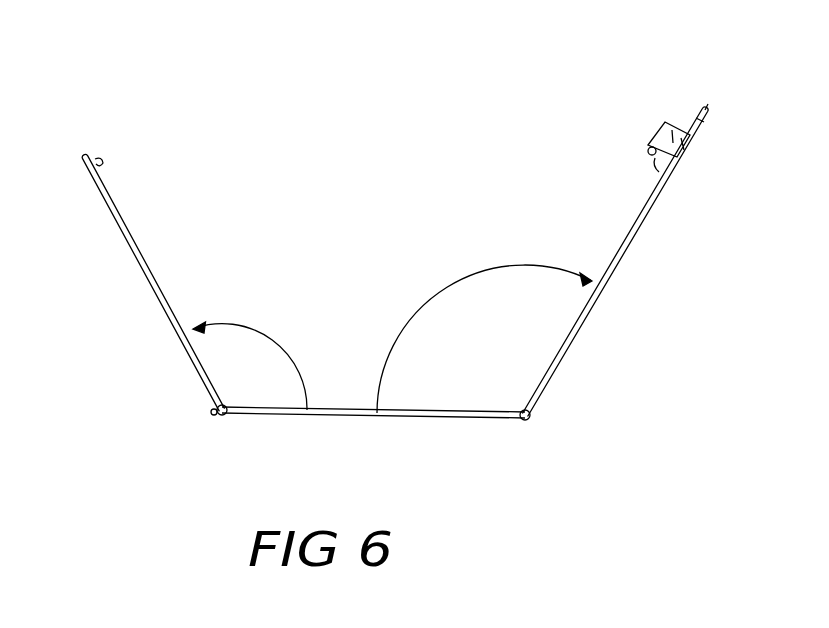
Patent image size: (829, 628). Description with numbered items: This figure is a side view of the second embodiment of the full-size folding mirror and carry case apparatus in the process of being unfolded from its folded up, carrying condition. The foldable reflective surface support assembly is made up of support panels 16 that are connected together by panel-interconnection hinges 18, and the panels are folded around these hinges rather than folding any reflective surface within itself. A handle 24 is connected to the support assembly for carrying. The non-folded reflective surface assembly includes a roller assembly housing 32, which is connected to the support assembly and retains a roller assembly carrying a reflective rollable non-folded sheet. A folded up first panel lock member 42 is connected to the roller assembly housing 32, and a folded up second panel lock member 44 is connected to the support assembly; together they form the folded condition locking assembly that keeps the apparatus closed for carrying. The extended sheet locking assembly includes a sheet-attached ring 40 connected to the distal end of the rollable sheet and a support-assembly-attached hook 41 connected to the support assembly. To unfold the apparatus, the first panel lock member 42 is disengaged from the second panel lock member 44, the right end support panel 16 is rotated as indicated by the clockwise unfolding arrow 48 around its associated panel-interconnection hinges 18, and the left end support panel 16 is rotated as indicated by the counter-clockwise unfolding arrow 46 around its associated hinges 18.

The support panel 16 is at (143, 269).
The panel-interconnection hinge 18 is at (222, 418).
The handle 24 is at (705, 110).
The roller assembly housing 32 is at (660, 138).
The sheet-attached ring 40 is at (653, 170).
The support-assembly-attached hook 41 is at (100, 162).
The folded up first panel lock member 42 is at (648, 152).
The folded up second panel lock member 44 is at (212, 412).
The counter-clockwise unfolding arrow 46 is at (250, 330).
The clockwise unfolding arrow 48 is at (422, 296).